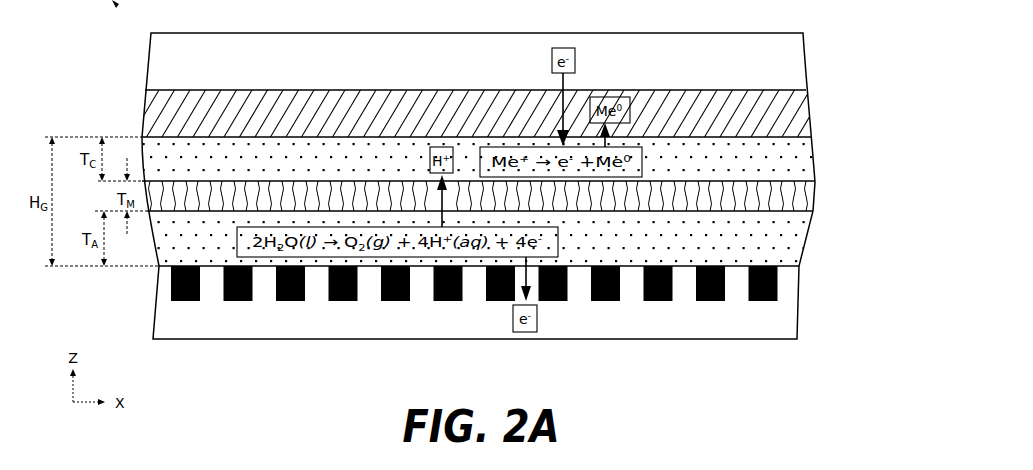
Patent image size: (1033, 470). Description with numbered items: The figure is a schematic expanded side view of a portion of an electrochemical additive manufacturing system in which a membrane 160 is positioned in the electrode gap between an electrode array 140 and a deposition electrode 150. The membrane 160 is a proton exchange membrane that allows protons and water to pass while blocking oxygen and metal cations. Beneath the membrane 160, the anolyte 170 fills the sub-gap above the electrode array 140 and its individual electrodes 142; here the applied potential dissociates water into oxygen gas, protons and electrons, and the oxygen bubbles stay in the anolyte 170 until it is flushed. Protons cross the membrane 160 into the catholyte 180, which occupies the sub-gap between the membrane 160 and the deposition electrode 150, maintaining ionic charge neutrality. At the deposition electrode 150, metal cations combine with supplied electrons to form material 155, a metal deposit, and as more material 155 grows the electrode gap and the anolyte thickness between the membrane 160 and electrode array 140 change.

The deposition electrode 150 is at (783, 58).
The material 155 is at (775, 115).
The catholyte 180 is at (797, 153).
The membrane 160 is at (807, 190).
The anolyte 170 is at (795, 225).
The electrode contacts 142 is at (780, 285).
The electrode array 140 is at (780, 313).